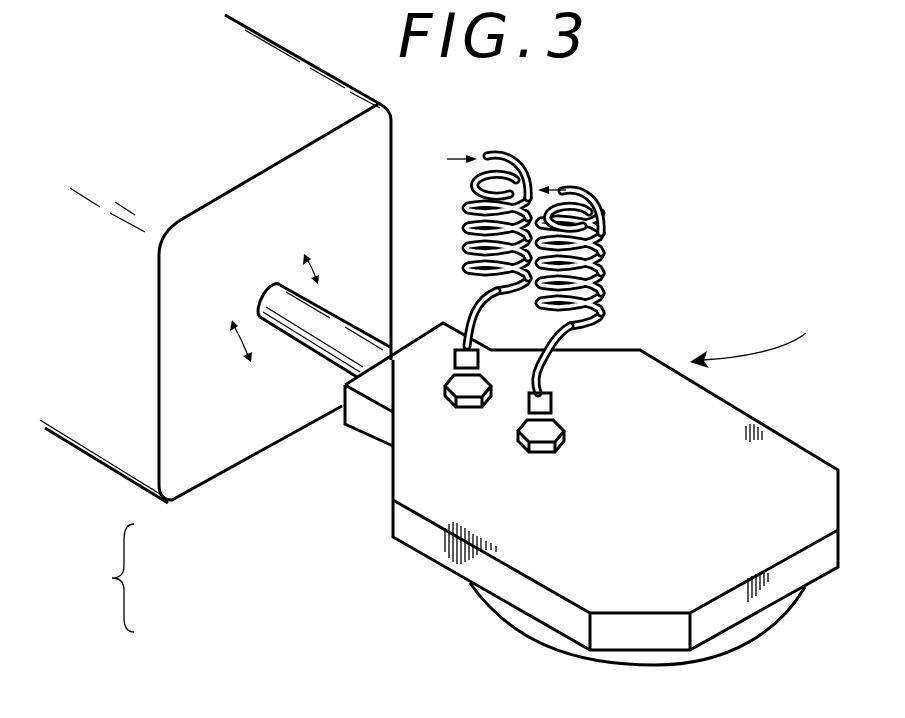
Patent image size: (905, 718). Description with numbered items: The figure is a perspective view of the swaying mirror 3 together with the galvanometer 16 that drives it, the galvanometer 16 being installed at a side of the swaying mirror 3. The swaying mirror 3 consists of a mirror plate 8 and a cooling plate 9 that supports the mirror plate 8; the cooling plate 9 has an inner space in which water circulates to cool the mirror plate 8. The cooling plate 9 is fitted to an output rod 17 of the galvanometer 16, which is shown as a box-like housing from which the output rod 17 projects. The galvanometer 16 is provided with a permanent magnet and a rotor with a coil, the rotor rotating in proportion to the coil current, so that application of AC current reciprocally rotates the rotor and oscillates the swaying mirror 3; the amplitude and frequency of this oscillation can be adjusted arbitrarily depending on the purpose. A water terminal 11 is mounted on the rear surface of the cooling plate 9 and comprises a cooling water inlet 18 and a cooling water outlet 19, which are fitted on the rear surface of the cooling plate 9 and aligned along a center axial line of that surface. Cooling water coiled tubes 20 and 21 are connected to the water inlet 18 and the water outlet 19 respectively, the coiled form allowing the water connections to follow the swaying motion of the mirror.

The swaying mirror 3 is at (764, 412).
The mirror plate 8 is at (730, 635).
The cooling plate 9 is at (868, 403).
The water terminal 11 is at (102, 578).
The galvanometer 16 is at (196, 126).
The output rod 17 is at (330, 316).
The cooling water inlet 18 is at (480, 397).
The cooling water outlet 19 is at (540, 455).
The cooling water coiled tube 20 is at (613, 152).
The cooling water coiled tube 21 is at (730, 203).